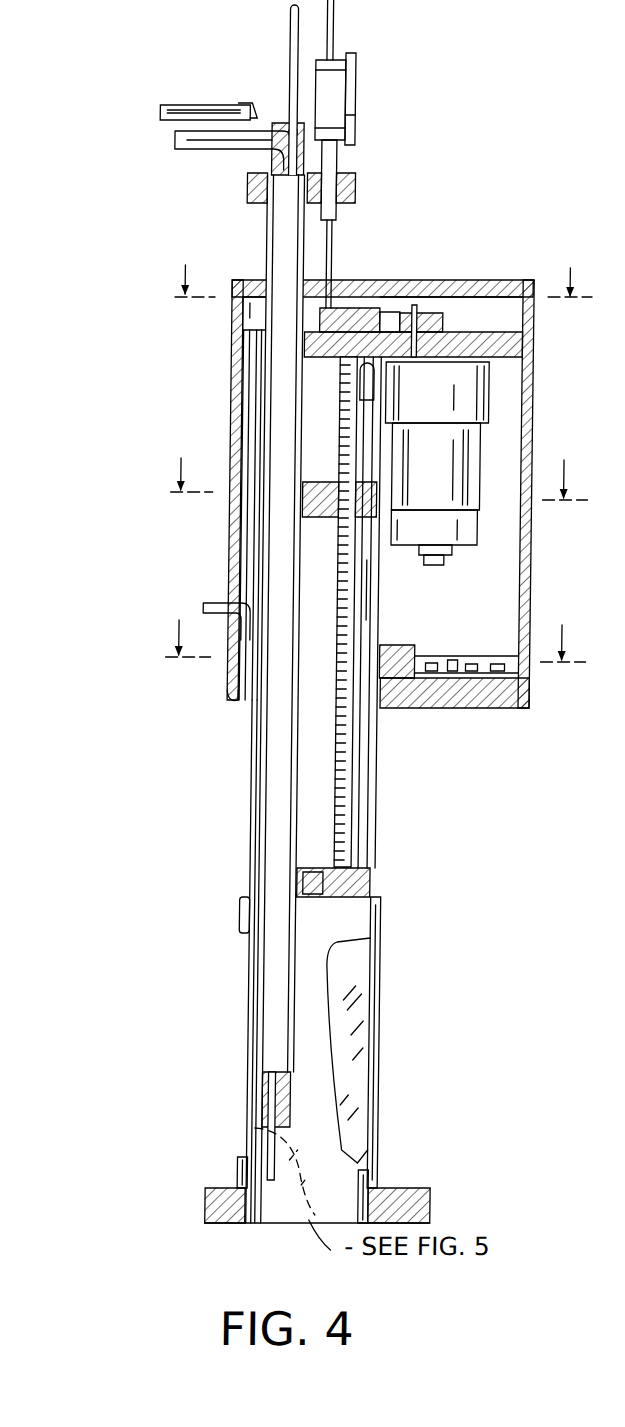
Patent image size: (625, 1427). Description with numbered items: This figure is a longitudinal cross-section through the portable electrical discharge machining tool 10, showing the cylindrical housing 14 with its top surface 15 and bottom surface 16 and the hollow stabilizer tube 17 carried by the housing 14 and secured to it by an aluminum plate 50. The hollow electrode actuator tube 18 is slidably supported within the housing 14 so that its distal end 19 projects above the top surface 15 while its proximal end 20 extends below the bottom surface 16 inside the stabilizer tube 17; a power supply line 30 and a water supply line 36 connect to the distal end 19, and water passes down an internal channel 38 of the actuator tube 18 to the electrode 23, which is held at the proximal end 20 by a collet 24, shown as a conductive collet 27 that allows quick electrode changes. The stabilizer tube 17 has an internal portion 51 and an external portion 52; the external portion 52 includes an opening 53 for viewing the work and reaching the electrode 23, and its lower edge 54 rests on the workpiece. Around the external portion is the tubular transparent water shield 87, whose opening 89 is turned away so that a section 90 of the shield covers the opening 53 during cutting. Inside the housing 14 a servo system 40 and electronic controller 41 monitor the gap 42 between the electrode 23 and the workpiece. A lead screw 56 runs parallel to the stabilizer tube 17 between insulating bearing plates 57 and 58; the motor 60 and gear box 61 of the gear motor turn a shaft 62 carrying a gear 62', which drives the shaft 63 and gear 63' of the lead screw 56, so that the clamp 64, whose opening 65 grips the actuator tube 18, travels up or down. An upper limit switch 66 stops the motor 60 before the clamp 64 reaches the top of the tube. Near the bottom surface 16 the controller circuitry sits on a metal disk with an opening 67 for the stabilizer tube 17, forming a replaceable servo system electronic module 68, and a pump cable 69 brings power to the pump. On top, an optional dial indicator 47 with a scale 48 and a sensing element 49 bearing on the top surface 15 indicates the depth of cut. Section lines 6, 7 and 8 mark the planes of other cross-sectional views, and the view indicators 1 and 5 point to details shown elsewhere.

The apparatus 1 is at (538, 402).
The housing interior 5 is at (493, 437).
The section line 6- 6 is at (384, 263).
The section line 7- 7 is at (380, 461).
The section line 8- 8 is at (376, 623).
The EDM tool 10 is at (98, 78).
The cylindrical housing 14 is at (232, 336).
The top surface 15 is at (505, 292).
The bottom surface 16 is at (504, 708).
The stabilizer tube 17 is at (386, 758).
The electrode actuator tube 18 is at (268, 752).
The distal end 19 is at (262, 166).
The proximal end 20 is at (272, 1080).
The electrode 23 is at (256, 1172).
The collet 24 is at (286, 1130).
The conductive collet 27 is at (432, 1212).
The power supply line 30 is at (190, 112).
The water supply line 36 is at (176, 141).
The internal channel 38 is at (288, 250).
The servo system 40 is at (450, 578).
The electronic controller 41 is at (462, 652).
The gap 42 is at (278, 1212).
The dial indicator 47 is at (340, 55).
The scale 48 is at (356, 104).
The sensing element 49 is at (336, 280).
The aluminum plate 50 is at (512, 346).
The internal portion 51 is at (372, 605).
The external portion 52 is at (378, 884).
The opening 53 is at (362, 990).
The lower edge 54 is at (382, 1182).
The lead screw 56 is at (344, 528).
The insulating bearing plate 57 is at (305, 362).
The insulating bearing plate 58 is at (310, 878).
The motor 60 is at (450, 463).
The gear box 61 is at (490, 396).
The shaft 62 is at (489, 326).
The gear 62' is at (466, 299).
The shaft 63 is at (370, 281).
The gear 63' is at (424, 288).
The clamp 64 is at (346, 492).
The opening 65 is at (244, 952).
The upper limit switch 66 is at (376, 380).
The opening 67 is at (238, 701).
The servo system electronic module 68 is at (392, 645).
The pump cable 69 is at (212, 604).
The water shield 87 is at (378, 1042).
The opening 89 is at (252, 998).
The section 90 is at (388, 1126).